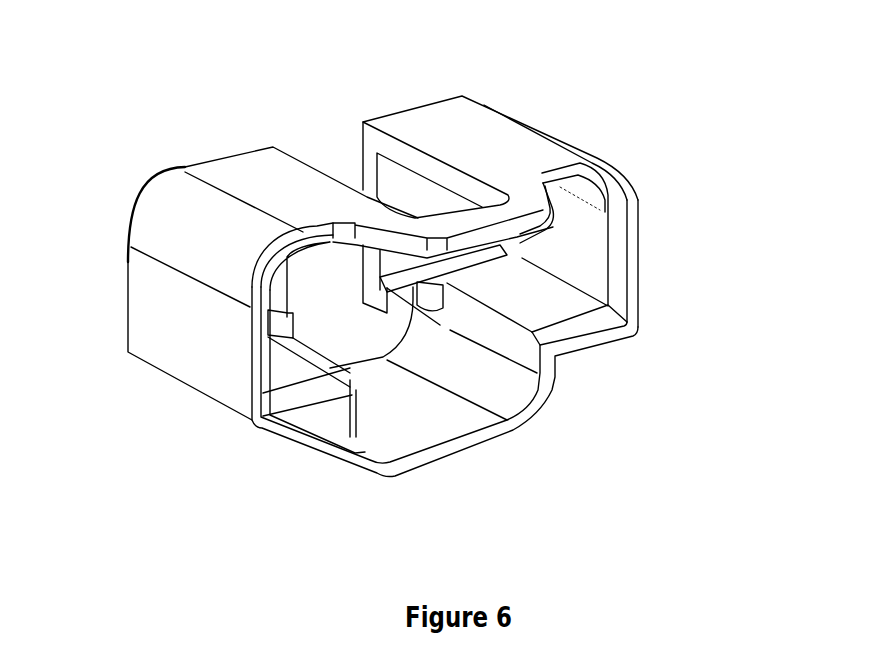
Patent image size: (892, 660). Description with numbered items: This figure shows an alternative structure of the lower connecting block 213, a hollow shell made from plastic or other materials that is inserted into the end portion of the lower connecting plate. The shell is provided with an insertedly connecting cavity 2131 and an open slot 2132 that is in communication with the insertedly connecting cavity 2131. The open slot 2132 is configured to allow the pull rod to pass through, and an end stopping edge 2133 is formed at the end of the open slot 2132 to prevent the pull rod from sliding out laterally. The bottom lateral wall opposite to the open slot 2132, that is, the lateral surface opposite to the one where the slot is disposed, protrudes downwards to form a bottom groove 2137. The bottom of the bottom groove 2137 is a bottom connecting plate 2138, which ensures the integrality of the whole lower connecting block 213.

The lower connecting block 213 is at (247, 177).
The insertedly connecting cavity 2131 is at (557, 255).
The open slot 2132 is at (333, 148).
The end stopping edge 2133 is at (496, 222).
The bottom groove 2137 is at (377, 373).
The bottom connecting plate 2138 is at (435, 425).